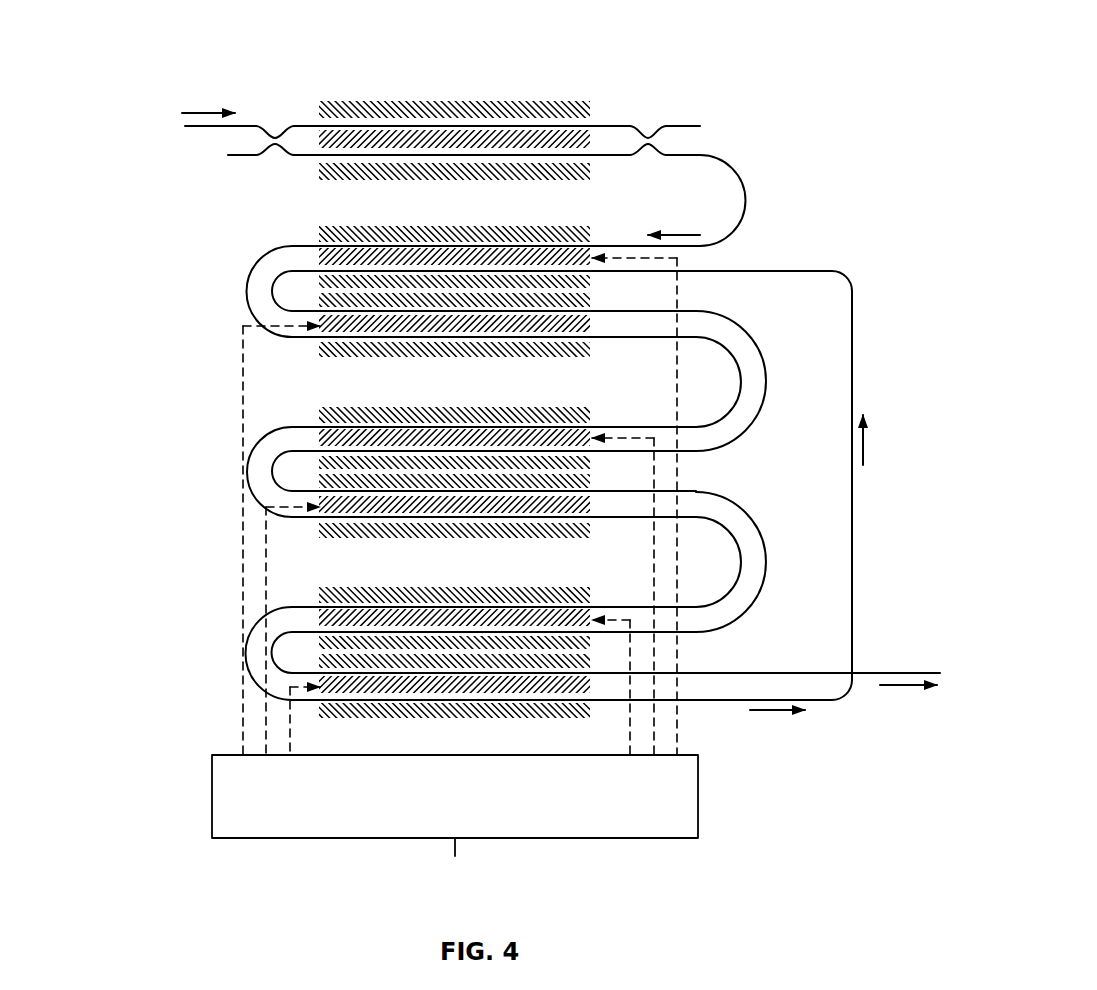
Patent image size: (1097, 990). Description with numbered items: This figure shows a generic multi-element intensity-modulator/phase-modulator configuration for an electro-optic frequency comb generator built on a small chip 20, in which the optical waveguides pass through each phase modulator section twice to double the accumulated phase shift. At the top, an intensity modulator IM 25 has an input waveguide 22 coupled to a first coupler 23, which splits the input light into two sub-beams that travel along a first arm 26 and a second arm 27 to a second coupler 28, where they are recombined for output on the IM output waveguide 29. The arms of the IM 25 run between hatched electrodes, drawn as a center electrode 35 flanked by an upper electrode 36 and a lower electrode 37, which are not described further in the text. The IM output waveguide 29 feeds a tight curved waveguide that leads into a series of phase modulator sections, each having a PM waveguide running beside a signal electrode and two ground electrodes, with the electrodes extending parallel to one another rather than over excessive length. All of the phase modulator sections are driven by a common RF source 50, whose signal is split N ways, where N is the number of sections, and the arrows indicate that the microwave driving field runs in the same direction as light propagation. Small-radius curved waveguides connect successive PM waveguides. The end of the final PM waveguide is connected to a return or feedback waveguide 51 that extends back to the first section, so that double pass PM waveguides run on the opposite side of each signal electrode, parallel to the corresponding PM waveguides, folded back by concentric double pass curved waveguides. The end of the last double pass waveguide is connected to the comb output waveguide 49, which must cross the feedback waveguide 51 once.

The chip 20 is at (952, 241).
The input waveguide 22 is at (193, 130).
The first coupler 23 is at (274, 136).
The IM 25 is at (560, 82).
The first arm 26 is at (303, 125).
The second arm 27 is at (297, 158).
The second coupler 28 is at (643, 136).
The IM output waveguide 29 is at (682, 153).
The center electrode 35 is at (357, 143).
The upper ground electrode 36 is at (440, 107).
The lower ground electrode 37 is at (457, 170).
The comb output waveguide 49 is at (918, 675).
The RF source 50 is at (660, 818).
The feedback waveguide 51 is at (853, 565).